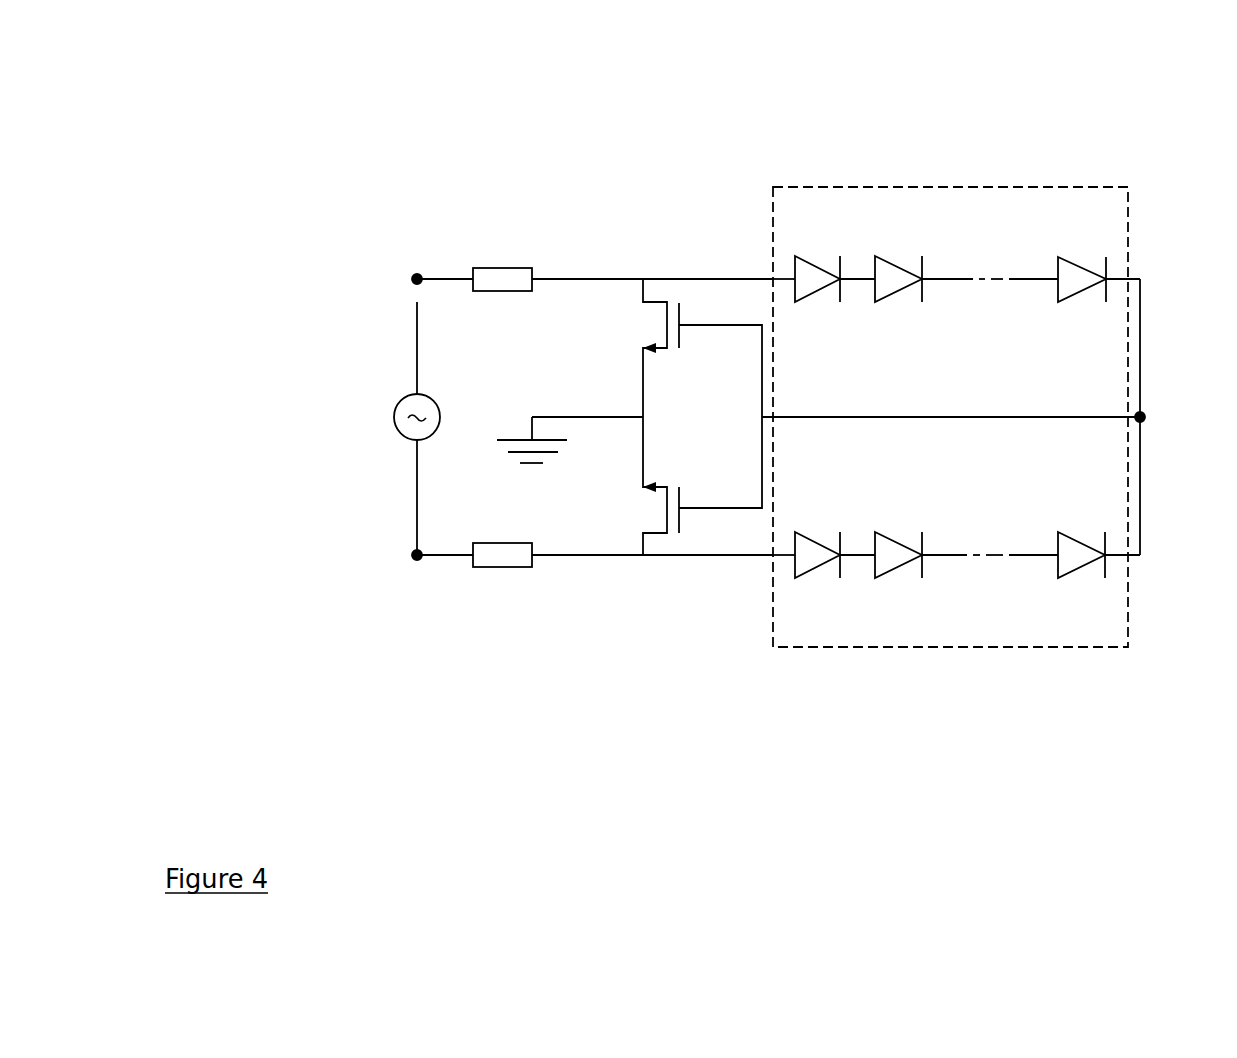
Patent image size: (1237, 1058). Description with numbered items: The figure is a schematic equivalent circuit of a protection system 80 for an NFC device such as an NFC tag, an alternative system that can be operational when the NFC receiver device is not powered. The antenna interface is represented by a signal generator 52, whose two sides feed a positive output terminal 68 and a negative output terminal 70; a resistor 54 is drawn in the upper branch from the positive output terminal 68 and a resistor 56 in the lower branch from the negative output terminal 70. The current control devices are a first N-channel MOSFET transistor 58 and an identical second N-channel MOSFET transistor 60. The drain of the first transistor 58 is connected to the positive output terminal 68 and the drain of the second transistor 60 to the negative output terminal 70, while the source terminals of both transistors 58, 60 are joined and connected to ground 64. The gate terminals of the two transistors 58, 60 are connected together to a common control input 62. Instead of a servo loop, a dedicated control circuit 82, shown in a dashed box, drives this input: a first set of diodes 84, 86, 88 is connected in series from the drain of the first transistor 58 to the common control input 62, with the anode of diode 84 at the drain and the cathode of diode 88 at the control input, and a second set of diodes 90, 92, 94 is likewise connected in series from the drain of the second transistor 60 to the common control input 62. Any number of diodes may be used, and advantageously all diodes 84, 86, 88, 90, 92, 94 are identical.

The protection system 80 is at (560, 130).
The control circuit 82 is at (793, 186).
The signal generator 52 is at (402, 405).
The first resistor 54 is at (519, 276).
The second resistor 56 is at (522, 557).
The first N-channel MOSFET transistor 58 is at (678, 325).
The second N-channel MOSFET transistor 60 is at (680, 508).
The common control input 62 is at (1142, 422).
The ground 64 is at (553, 453).
The positive output terminal 68 is at (418, 272).
The negative output terminal 70 is at (418, 562).
The first diode of first set 84 is at (818, 275).
The second diode of first set 86 is at (898, 275).
The last diode of first set 88 is at (1082, 277).
The first diode of second set 90 is at (818, 558).
The second diode of second set 92 is at (898, 558).
The last diode of second set 94 is at (1082, 558).